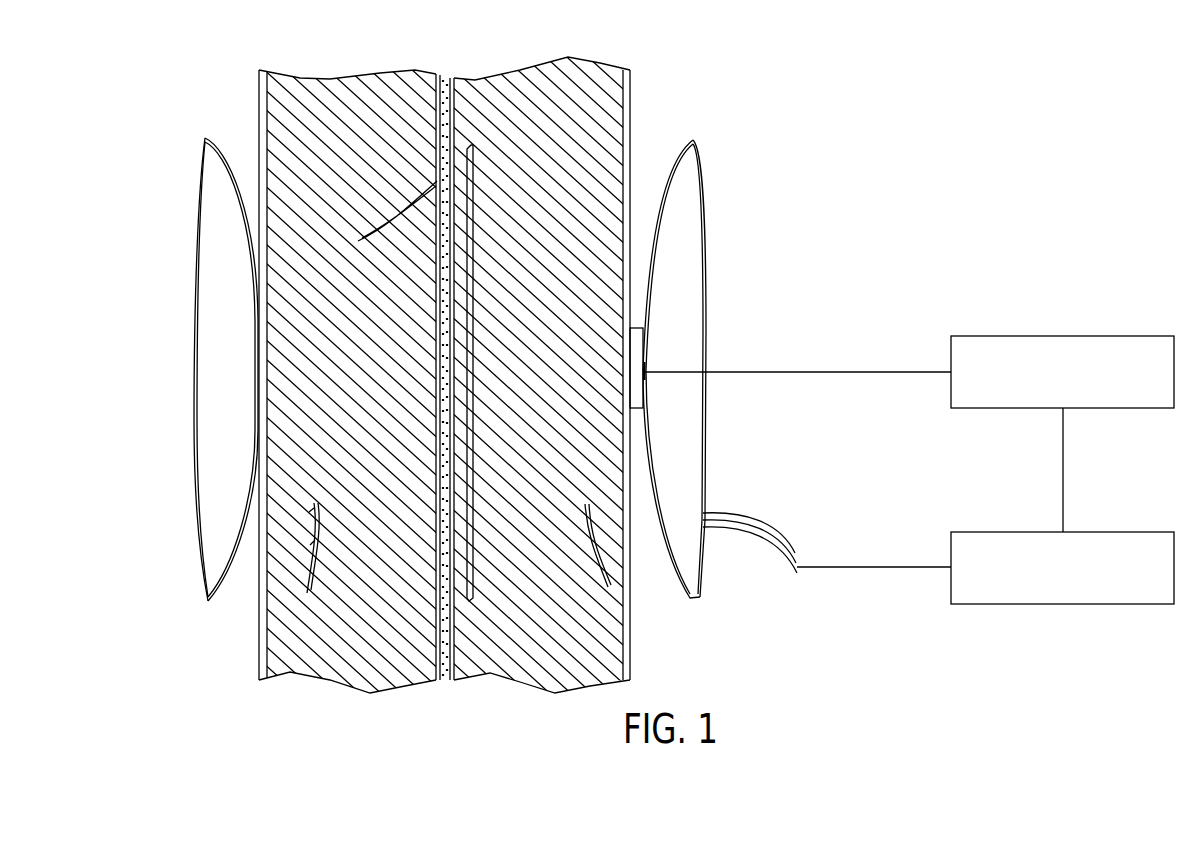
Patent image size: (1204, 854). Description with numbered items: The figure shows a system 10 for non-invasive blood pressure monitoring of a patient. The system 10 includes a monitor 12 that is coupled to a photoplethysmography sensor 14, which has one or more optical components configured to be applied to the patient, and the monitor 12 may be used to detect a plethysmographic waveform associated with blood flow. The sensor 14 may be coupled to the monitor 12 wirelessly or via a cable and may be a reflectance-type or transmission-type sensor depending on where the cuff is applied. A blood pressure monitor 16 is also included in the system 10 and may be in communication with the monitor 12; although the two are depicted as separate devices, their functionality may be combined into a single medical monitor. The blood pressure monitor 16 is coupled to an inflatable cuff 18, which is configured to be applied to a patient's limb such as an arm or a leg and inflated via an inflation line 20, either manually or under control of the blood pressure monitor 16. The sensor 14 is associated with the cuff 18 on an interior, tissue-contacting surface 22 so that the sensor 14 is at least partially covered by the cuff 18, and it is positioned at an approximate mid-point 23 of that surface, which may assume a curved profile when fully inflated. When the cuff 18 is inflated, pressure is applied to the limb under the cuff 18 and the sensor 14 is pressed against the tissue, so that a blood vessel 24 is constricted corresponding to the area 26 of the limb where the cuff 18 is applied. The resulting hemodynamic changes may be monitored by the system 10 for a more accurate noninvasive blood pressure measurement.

The system 10 is at (860, 100).
The monitor 12 is at (1137, 337).
The photoplethysmography sensor 14 is at (639, 412).
The blood pressure monitor 16 is at (1137, 532).
The inflatable cuff 18 is at (198, 177).
The inflation line 20 is at (765, 527).
The interior surface 22 is at (657, 203).
The mid-point 23 is at (652, 365).
The blood vessel 24 is at (432, 102).
The area 26 is at (476, 380).